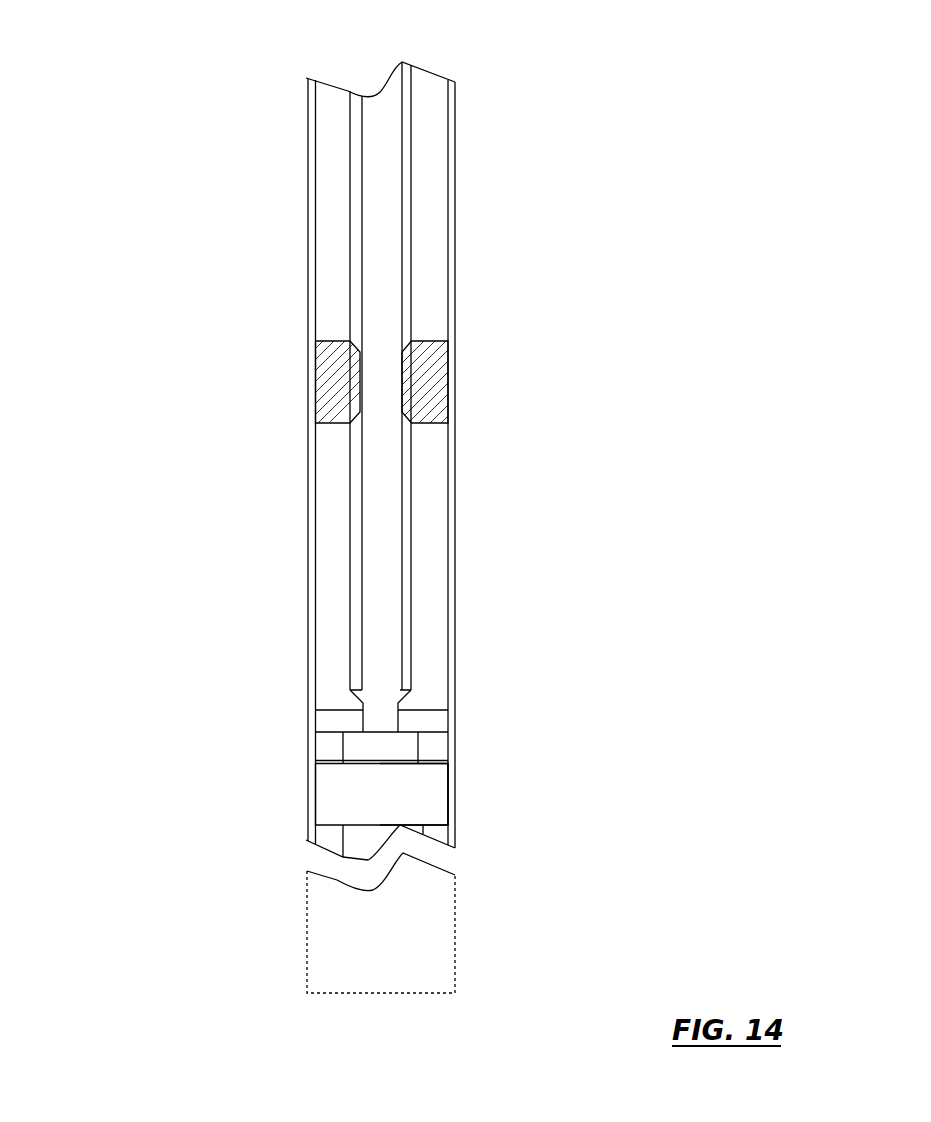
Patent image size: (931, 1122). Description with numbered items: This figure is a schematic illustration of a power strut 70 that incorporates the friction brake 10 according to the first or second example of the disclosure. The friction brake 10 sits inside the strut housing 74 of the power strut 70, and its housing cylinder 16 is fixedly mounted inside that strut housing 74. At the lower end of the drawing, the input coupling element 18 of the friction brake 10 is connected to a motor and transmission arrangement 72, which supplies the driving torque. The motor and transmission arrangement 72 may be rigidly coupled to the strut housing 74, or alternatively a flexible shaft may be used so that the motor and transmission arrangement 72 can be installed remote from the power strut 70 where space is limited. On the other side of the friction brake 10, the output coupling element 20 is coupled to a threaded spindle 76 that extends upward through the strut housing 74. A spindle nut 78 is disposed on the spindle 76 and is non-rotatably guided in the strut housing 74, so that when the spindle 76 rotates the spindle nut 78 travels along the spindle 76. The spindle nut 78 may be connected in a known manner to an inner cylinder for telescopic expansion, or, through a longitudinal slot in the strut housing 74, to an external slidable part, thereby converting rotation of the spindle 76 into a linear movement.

The power strut 70 is at (547, 180).
The motor and transmission arrangement 72 is at (425, 950).
The strut housing 74 is at (312, 690).
The threaded spindle 76 is at (390, 562).
The spindle nut 78 is at (327, 372).
The friction brake 10 is at (415, 805).
The housing cylinder 16 is at (332, 797).
The input coupling element 18 is at (355, 843).
The output coupling element 20 is at (402, 748).